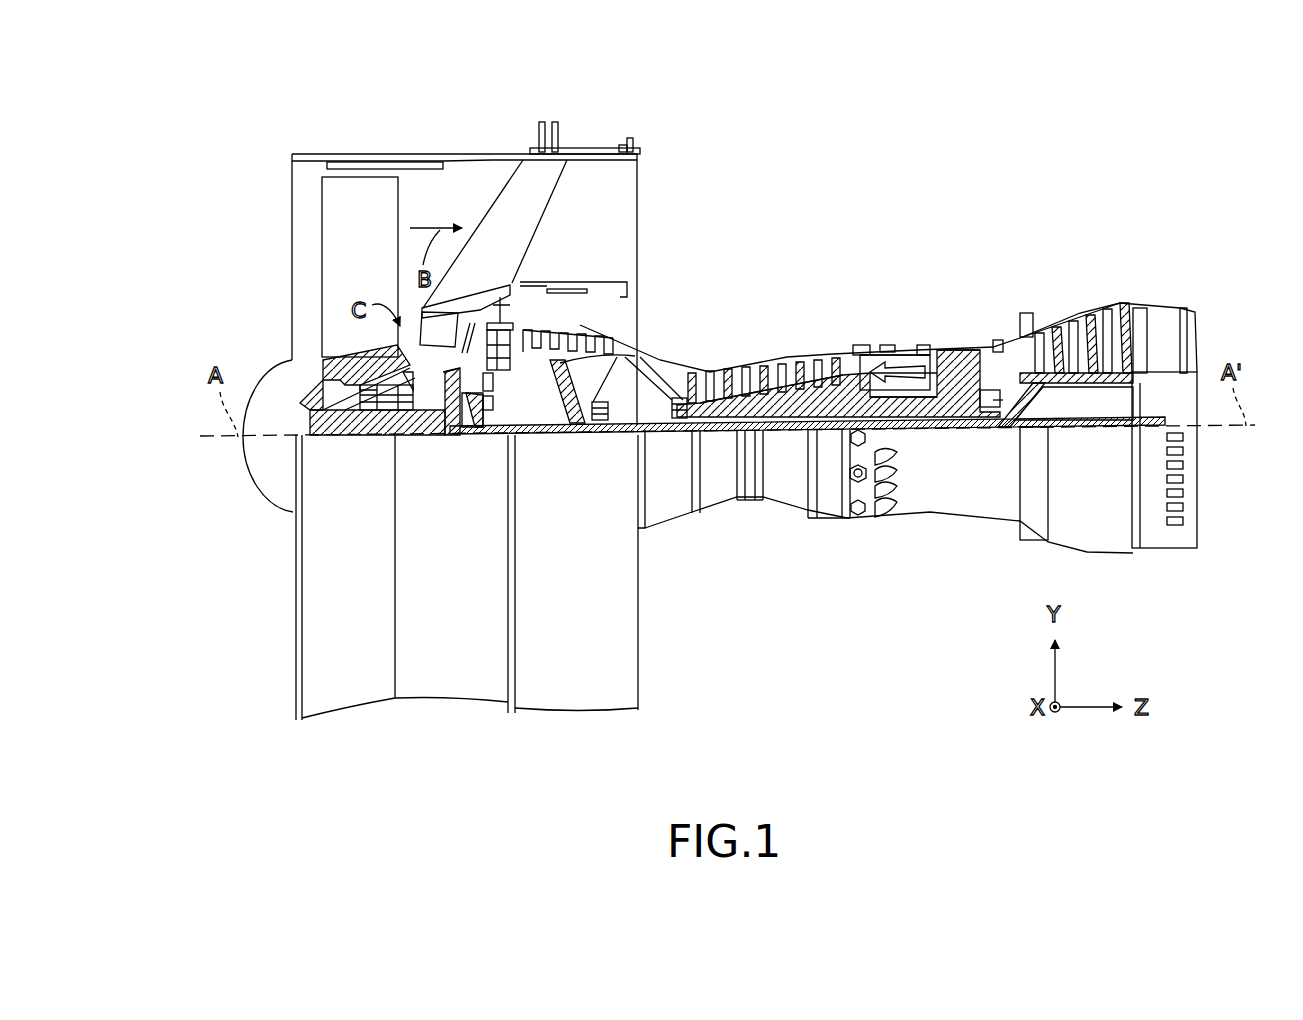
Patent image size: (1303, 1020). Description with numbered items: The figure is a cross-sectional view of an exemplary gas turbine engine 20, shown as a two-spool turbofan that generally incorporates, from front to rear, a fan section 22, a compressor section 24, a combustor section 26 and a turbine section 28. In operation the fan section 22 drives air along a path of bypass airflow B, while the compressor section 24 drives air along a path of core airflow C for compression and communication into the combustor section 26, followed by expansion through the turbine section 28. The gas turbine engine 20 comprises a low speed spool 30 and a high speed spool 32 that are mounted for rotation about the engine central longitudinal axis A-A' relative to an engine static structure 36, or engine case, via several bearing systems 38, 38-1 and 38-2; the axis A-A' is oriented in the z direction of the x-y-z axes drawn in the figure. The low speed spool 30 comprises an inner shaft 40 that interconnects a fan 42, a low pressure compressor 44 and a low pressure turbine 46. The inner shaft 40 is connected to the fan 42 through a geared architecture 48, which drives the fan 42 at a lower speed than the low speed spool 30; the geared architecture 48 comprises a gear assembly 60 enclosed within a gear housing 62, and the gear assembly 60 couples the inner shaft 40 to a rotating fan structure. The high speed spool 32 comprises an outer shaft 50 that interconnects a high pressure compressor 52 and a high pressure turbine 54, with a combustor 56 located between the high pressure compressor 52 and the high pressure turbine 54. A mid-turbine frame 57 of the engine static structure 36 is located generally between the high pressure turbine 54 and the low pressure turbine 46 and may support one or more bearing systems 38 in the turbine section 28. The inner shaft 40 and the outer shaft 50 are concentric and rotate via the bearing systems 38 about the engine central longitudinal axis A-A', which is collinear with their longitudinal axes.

The gas turbine engine 20 is at (940, 140).
The fan section 22 is at (485, 138).
The compressor section 24 is at (510, 244).
The combustor section 26 is at (940, 250).
The turbine section 28 is at (1133, 249).
The low speed spool 30 is at (792, 442).
The high speed spool 32 is at (833, 390).
The engine static structure 36 is at (828, 496).
The bearing system 38 is at (997, 400).
The bearing system 38-1 is at (372, 412).
The bearing system 38-2 is at (600, 428).
The inner shaft 40 is at (660, 432).
The fan 42 is at (362, 274).
The low pressure compressor 44 is at (577, 328).
The low pressure turbine 46 is at (1080, 327).
The geared architecture 48 is at (467, 466).
The outer shaft 50 is at (897, 410).
The high pressure compressor 52 is at (803, 393).
The high pressure turbine 54 is at (957, 352).
The combustor 56 is at (882, 370).
The mid-turbine frame 57 is at (997, 340).
The gear assembly 60 is at (494, 404).
The gear housing 62 is at (494, 384).